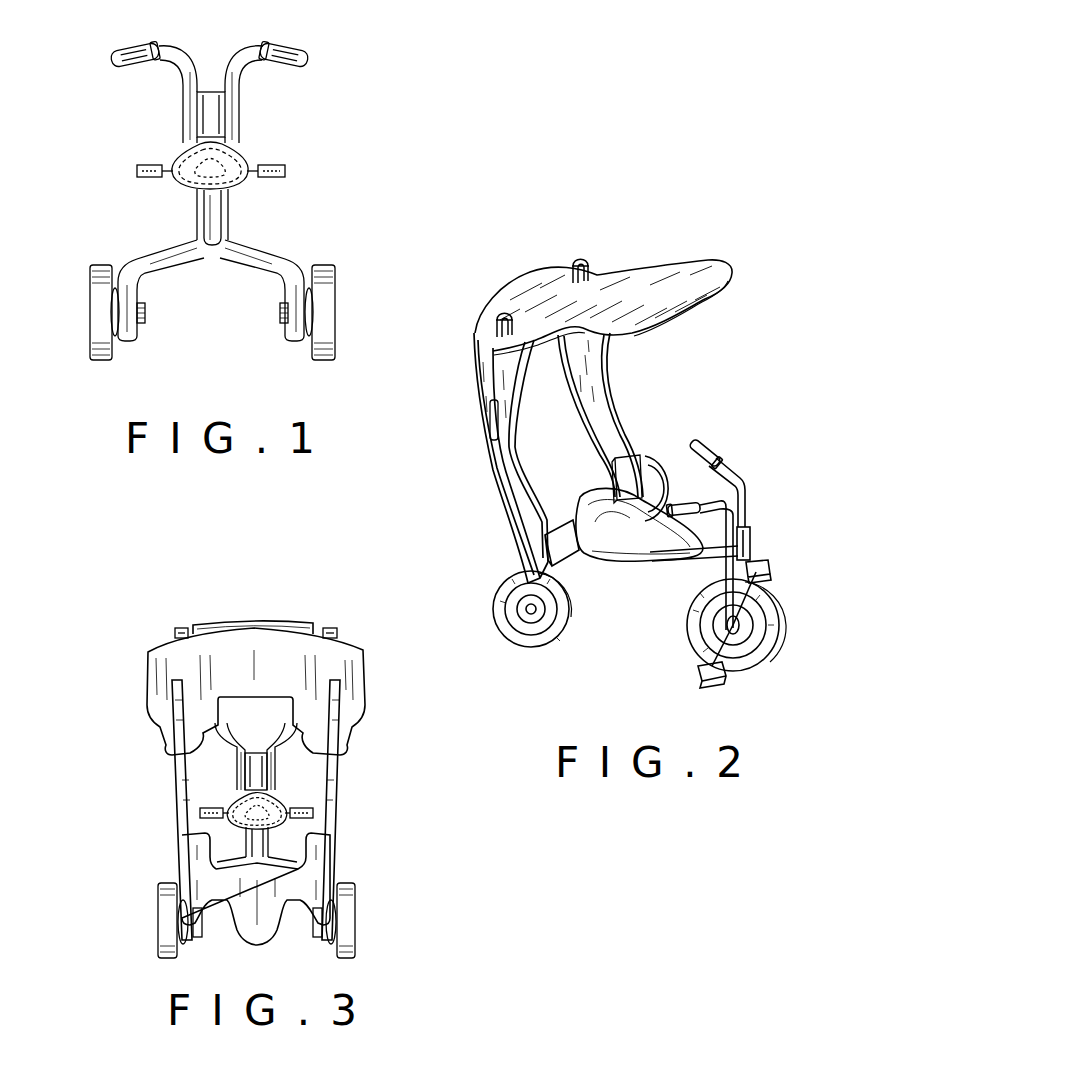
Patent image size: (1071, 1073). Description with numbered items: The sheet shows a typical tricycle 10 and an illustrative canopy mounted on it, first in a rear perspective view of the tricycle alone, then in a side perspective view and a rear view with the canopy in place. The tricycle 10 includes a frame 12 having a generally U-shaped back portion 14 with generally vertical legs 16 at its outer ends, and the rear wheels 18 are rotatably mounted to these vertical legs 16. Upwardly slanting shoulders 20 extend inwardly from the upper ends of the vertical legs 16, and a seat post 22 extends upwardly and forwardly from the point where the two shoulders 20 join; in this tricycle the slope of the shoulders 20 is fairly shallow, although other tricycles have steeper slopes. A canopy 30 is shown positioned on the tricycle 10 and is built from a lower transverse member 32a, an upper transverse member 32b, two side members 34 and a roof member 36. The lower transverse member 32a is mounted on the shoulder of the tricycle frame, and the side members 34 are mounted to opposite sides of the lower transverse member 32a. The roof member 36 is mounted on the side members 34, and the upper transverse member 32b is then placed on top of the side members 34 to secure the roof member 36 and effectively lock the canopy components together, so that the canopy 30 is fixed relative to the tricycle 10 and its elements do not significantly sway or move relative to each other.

In FIG. 1, the tricycle 10 is at (141, 118).
In FIG. 2, the tricycle 10 is at (703, 413).
In FIG. 1, the frame 12 is at (254, 224).
In FIG. 1, the back portion 14 is at (202, 273).
In FIG. 1, the vertical legs 16 is at (140, 294).
In FIG. 1, the rear wheels 18 is at (97, 327).
In FIG. 1, the shoulders 20 is at (165, 257).
In FIG. 1, the seat post 22 is at (210, 215).
In FIG. 2, the canopy 30 is at (620, 252).
In FIG. 3, the canopy 30 is at (235, 616).
In FIG. 2, the lower transverse member 32a is at (558, 520).
In FIG. 3, the lower transverse member 32a is at (283, 921).
In FIG. 2, the upper transverse member 32b is at (524, 269).
In FIG. 3, the upper transverse member 32b is at (365, 667).
In FIG. 2, the side members 34 is at (484, 461).
In FIG. 3, the side members 34 is at (331, 780).
In FIG. 2, the roof member 36 is at (720, 258).
In FIG. 3, the roof member 36 is at (298, 621).